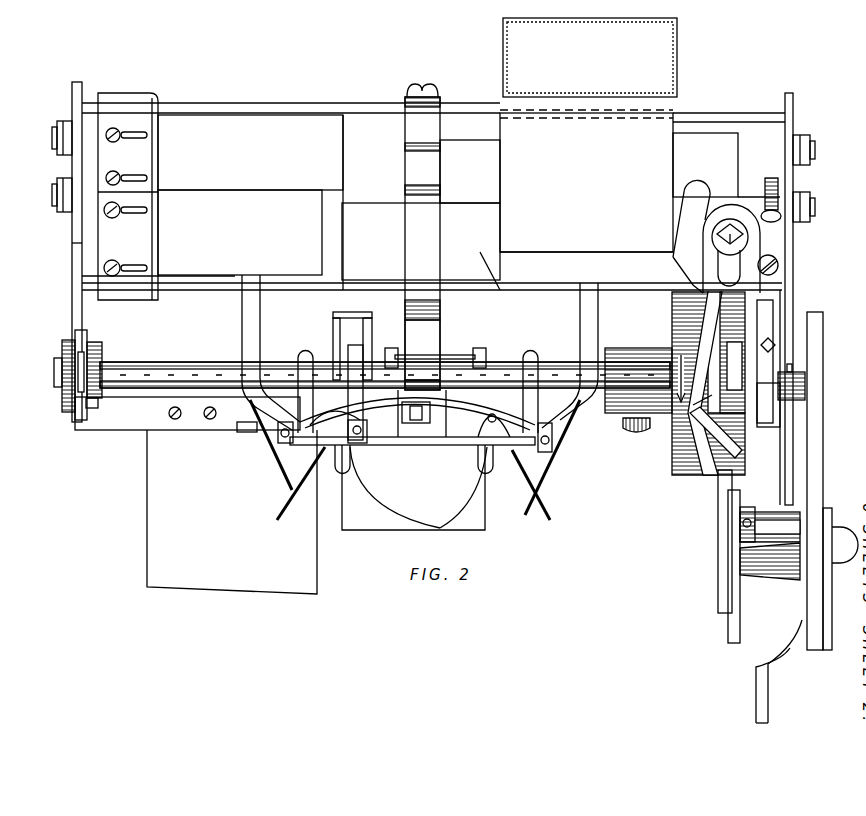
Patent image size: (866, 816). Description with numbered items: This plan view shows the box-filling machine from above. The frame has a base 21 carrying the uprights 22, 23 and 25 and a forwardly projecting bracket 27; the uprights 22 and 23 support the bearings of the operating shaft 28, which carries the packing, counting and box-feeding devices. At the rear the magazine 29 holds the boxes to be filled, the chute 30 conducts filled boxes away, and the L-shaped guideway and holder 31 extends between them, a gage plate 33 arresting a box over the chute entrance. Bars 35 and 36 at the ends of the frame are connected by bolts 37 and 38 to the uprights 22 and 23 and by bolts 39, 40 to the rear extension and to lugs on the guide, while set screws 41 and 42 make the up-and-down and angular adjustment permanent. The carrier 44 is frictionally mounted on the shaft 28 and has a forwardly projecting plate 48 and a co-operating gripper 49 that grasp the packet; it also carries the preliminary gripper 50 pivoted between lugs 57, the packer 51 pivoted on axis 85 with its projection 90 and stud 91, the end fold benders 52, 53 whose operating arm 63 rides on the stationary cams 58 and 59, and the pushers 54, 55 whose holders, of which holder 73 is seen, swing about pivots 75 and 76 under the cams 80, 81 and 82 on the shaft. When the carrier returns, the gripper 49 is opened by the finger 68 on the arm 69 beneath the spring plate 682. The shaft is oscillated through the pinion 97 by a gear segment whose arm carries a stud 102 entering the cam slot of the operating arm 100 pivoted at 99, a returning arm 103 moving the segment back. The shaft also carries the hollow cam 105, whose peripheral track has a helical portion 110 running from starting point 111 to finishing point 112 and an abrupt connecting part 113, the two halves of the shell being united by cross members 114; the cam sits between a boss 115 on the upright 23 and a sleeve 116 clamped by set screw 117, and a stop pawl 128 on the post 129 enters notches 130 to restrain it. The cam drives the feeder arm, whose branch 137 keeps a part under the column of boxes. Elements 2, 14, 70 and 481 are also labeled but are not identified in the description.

The frame plate 2 is at (815, 481).
The cross bar 14 is at (406, 415).
The base 21 is at (135, 418).
The upright 22 is at (77, 265).
The upright 23 is at (773, 365).
The upright 25 is at (250, 432).
The forwardly projecting bracket 27 is at (725, 565).
The operating shaft 28 is at (195, 360).
The magazine 29 is at (678, 50).
The chute 30 is at (232, 512).
The guideway and holder 31 is at (262, 105).
The gage plate 33 is at (158, 177).
The bar 35 is at (70, 243).
The bar 36 is at (793, 175).
The bolt 37 is at (52, 368).
The bolt 38 is at (800, 370).
The bolt 39 is at (56, 138).
The bolt 40 is at (56, 195).
The set screw 41 is at (778, 262).
The set screw 42 is at (770, 178).
The carrier 44 is at (398, 442).
The forwardly projecting plate 48 is at (402, 532).
The plate edge 481 is at (357, 530).
The gripper 49 is at (442, 445).
The preliminary gripper 50 is at (425, 460).
The packer 51 is at (392, 358).
The end fold bender 52 is at (240, 232).
The end fold bender 53 is at (552, 470).
The pusher 54 is at (352, 150).
The pusher 55 is at (525, 485).
The lugs or wings 57 is at (448, 360).
The stationary cam 58 is at (248, 340).
The stationary cam 59 is at (590, 340).
The operating arm 63 is at (276, 452).
The finger 68 is at (417, 365).
The spring plate 682 is at (440, 325).
The arm 69 is at (415, 222).
The block 70 is at (414, 445).
The holder 73 is at (490, 380).
The pivot 75 is at (512, 387).
The pivot 76 is at (309, 427).
The cam 80 is at (490, 367).
The cam 81 is at (357, 350).
The cam 82 is at (520, 372).
The axis 85 is at (417, 447).
The projection 90 is at (332, 338).
The stud 91 is at (356, 348).
The pinion 97 is at (830, 525).
The pivot point 99 is at (728, 525).
The operating arm 100 is at (740, 610).
The stud 102 is at (752, 578).
The returning arm 103 is at (770, 690).
The cam 105 is at (708, 472).
The helical portion 110 is at (690, 330).
The starting point 111 is at (688, 432).
The finishing point 112 is at (722, 445).
The connecting part 113 is at (700, 460).
The cross members 114 is at (760, 322).
The boss 115 is at (770, 340).
The sleeve 116 is at (625, 400).
The set screw 117 is at (640, 434).
The stop pawl 128 is at (805, 385).
The post 129 is at (790, 295).
The notches 130 is at (712, 420).
The branch 137 is at (700, 200).